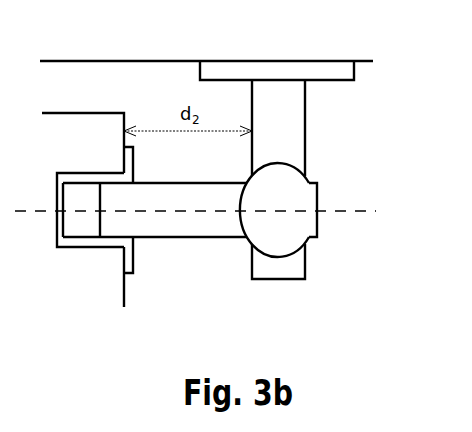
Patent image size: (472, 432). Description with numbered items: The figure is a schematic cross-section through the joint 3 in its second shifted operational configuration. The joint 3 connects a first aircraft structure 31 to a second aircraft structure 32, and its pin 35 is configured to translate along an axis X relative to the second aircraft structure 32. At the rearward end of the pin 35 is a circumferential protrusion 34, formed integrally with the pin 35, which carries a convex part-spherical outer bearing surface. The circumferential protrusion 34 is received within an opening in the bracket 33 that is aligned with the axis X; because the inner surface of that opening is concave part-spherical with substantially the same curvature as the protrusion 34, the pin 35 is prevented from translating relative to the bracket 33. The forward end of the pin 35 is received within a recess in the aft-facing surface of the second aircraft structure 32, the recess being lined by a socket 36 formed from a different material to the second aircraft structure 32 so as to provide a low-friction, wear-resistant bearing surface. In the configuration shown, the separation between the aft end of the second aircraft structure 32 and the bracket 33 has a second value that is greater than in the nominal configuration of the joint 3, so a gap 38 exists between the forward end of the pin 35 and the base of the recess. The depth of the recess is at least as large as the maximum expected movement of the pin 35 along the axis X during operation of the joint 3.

The joint 3 is at (343, 258).
The first aircraft structure 31 is at (184, 45).
The second aircraft structure 32 is at (68, 161).
The bracket 33 is at (264, 135).
The circumferential protrusion 34 is at (281, 163).
The pin 35 is at (187, 222).
The socket 36 is at (57, 181).
The gap 38 is at (83, 218).
The axis X is at (42, 215).